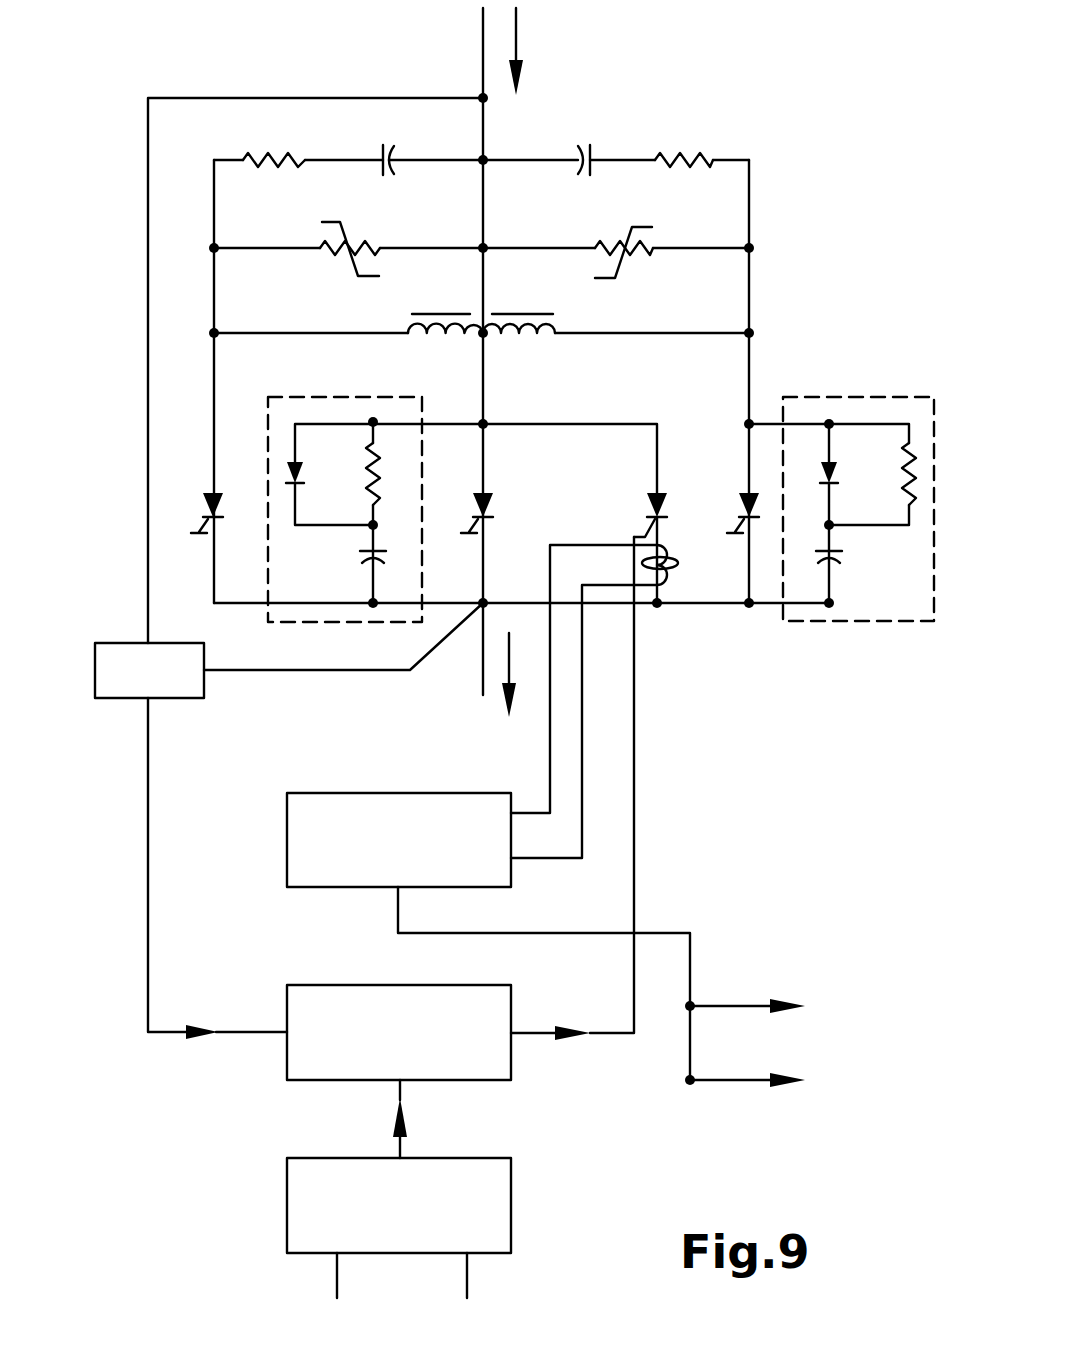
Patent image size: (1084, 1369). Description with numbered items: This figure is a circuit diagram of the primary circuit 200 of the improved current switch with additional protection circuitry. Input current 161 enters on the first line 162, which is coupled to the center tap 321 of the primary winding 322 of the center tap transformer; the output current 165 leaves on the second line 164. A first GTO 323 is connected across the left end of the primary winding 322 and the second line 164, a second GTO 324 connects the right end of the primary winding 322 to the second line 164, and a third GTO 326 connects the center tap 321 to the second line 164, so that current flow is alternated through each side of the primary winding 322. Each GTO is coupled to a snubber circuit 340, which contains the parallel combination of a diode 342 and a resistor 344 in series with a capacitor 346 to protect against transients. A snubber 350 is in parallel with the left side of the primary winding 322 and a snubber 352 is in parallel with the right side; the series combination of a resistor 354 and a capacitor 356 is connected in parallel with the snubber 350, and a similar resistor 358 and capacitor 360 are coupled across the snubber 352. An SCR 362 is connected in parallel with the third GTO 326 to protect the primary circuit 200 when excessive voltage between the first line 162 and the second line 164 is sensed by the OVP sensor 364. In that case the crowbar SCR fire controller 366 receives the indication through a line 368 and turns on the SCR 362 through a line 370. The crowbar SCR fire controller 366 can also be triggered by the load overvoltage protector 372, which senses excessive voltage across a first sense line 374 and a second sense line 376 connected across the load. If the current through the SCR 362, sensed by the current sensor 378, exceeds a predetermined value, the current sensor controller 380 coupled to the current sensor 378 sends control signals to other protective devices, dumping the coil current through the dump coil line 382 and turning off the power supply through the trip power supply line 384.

The input current 161 is at (518, 35).
The first line 162 is at (480, 63).
The second line 164 is at (481, 663).
The output current 165 is at (503, 703).
The primary circuit 200 is at (805, 117).
The center tap 321 is at (486, 336).
The primary winding 322 is at (445, 338).
The first GTO 323 is at (212, 500).
The second GTO 324 is at (743, 500).
The third GTO 326 is at (493, 498).
The snubber circuit 340 is at (305, 395).
The diode 342 is at (302, 467).
The resistor 344 is at (362, 482).
The capacitor 346 is at (370, 558).
The snubber 350 is at (320, 250).
The snubber 352 is at (648, 250).
The resistor 354 is at (290, 155).
The capacitor 356 is at (392, 152).
The resistor 358 is at (707, 152).
The capacitor 360 is at (592, 152).
The SCR 362 is at (655, 493).
The overvoltage protection (OVP) sensor 364 is at (173, 700).
The crowbar SCR fire controller 366 is at (287, 1060).
The line 368 is at (148, 978).
The line 370 is at (637, 812).
The load overvoltage protector 372 is at (287, 1192).
The first sense line 374 is at (337, 1273).
The second sense line 376 is at (468, 1278).
The current sensor 378 is at (675, 590).
The current sensor controller 380 is at (288, 885).
The dump coil line 382 is at (733, 1005).
The trip power supply line 384 is at (723, 1083).